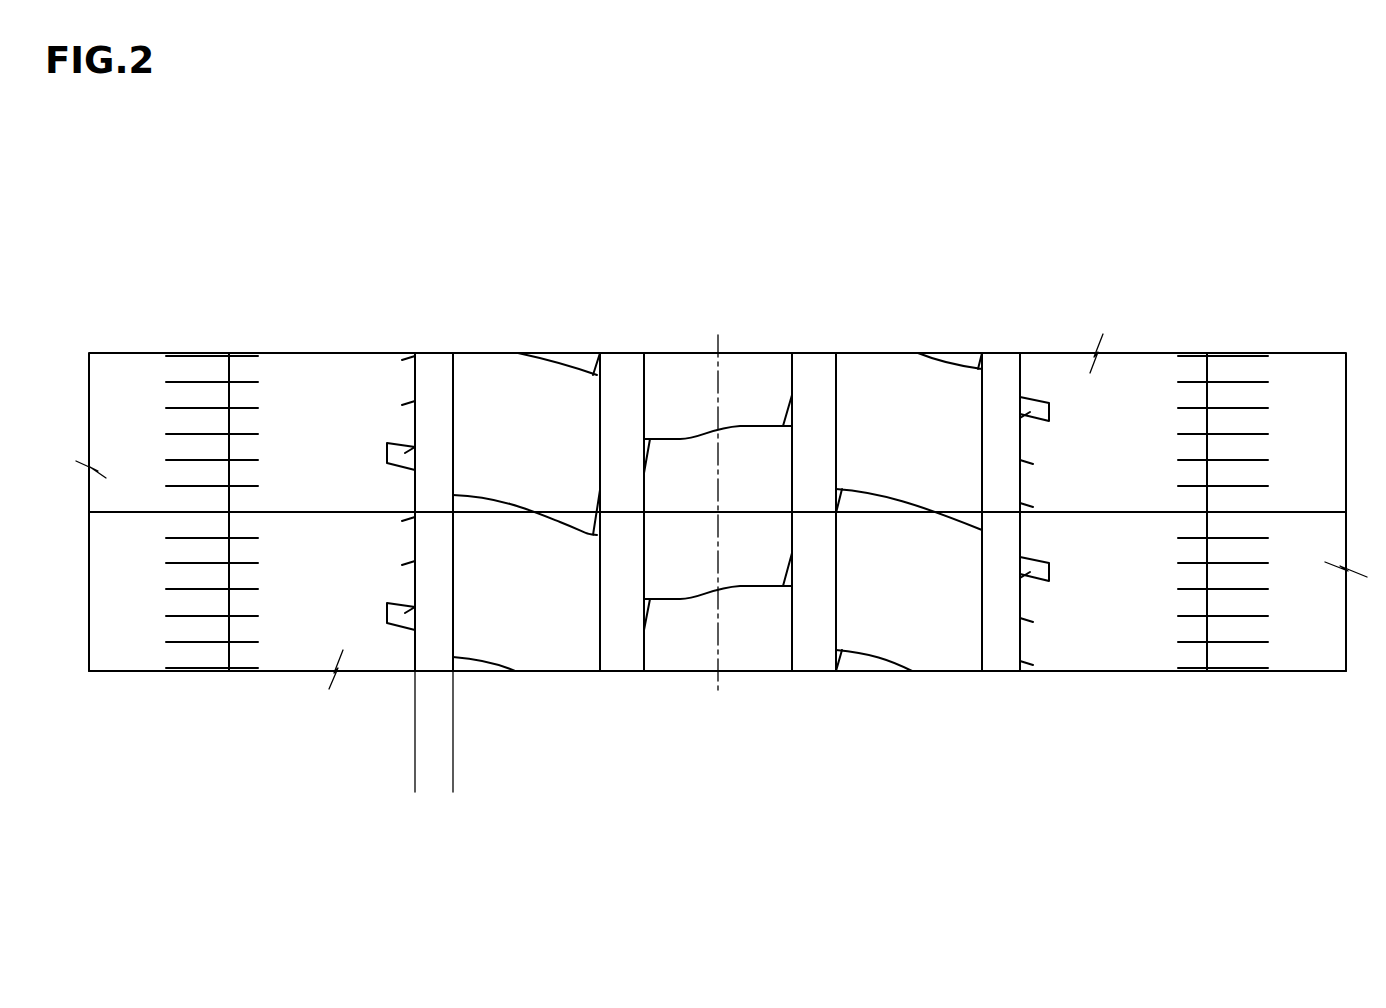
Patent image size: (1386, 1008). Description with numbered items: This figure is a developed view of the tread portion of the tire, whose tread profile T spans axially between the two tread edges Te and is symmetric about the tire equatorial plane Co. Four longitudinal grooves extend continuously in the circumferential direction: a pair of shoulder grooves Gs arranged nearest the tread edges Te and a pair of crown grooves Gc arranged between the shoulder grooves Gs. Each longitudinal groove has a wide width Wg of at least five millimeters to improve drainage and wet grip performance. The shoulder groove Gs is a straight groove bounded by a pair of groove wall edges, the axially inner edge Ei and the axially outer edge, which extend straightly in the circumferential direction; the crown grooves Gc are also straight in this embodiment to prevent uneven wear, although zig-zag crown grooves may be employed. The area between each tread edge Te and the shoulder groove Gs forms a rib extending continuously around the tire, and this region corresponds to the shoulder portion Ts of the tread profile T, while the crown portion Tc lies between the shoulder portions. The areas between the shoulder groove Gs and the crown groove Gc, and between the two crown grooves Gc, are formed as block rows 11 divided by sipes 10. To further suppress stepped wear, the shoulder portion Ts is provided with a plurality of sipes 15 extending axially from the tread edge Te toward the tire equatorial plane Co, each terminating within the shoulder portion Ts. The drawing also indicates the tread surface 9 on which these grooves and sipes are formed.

The tread profile T is at (1150, 635).
The tread edge Te is at (228, 375).
The sipes 15 is at (1245, 640).
The shoulder groove Gs is at (440, 383).
The crown groove Gc is at (625, 383).
The groove wall edge Ei is at (982, 390).
The tire equatorial plane Co is at (718, 498).
The sipes 10 is at (680, 600).
The block rows 11 is at (535, 630).
The crown portion Tc is at (962, 612).
The shoulder portion Ts is at (1052, 635).
The tread surface 9 is at (1100, 635).
The groove width Wg is at (488, 788).